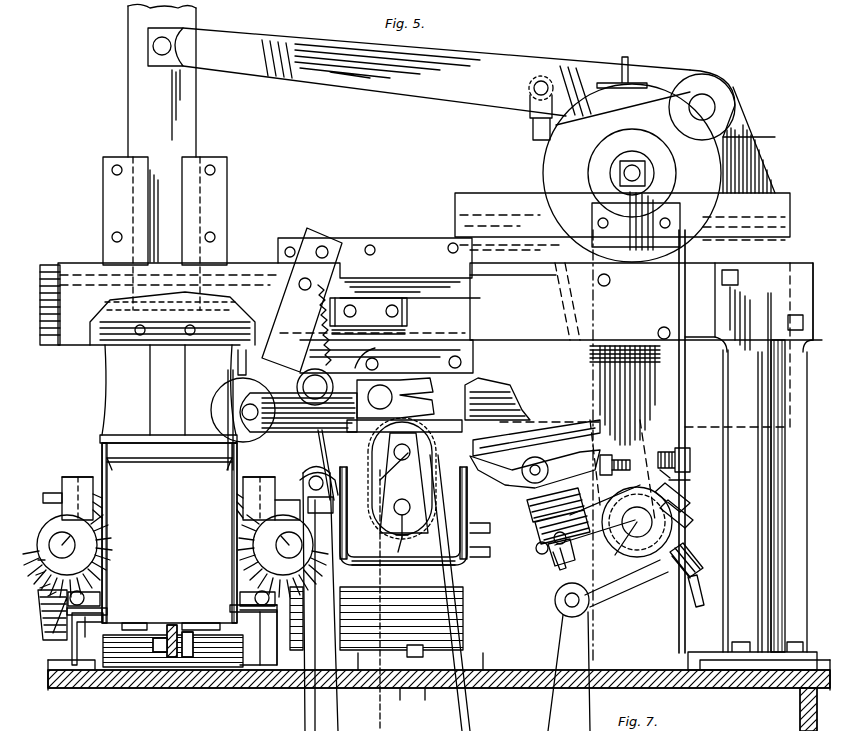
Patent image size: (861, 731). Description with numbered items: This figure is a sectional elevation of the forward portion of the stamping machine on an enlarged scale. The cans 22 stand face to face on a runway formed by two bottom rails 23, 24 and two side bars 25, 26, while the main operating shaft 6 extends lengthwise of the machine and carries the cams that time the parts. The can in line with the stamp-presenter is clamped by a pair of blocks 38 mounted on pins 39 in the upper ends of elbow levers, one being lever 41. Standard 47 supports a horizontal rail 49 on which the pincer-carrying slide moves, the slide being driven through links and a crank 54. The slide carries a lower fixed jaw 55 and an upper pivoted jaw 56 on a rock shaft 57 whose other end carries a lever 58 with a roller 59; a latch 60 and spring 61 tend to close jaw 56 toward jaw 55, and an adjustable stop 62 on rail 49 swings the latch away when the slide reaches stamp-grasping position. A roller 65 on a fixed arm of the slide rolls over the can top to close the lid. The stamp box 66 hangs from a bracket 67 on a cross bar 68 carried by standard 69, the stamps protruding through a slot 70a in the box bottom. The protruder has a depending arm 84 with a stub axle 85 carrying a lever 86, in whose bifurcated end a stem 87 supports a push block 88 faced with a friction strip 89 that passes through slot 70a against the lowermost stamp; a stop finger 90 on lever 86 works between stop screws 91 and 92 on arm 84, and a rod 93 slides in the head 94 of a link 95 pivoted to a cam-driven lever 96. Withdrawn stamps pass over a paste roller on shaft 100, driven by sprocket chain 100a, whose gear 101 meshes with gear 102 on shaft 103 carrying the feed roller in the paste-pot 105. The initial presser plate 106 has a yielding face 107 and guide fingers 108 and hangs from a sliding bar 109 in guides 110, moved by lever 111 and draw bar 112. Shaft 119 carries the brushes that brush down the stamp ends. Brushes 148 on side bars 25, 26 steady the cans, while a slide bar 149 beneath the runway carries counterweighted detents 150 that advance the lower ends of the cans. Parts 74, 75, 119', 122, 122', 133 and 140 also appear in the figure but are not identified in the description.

The main operating shaft 6 is at (368, 229).
The cans 22 is at (169, 533).
The bottom rail 23 is at (130, 638).
The bottom rail 24 is at (210, 636).
The side bar 25 is at (174, 635).
The side bar 26 is at (258, 612).
The blocks 38 is at (68, 477).
The pins 39 is at (285, 480).
The elbow lever 41 is at (320, 599).
The standard 47 is at (746, 502).
The rail 49 is at (641, 301).
The crank 54 is at (298, 412).
The lower fixed jaw 55 is at (420, 434).
The upper pivoted jaw 56 is at (470, 388).
The rock shaft 57 is at (386, 356).
The lever 58 is at (372, 352).
The roller 59 is at (325, 405).
The latch 60 is at (371, 300).
The spring 61 is at (368, 307).
The adjustable stop 62 is at (390, 299).
The roller 65 is at (265, 443).
The stamp box 66 is at (753, 466).
The bracket 67 is at (622, 221).
The cross bar 68 is at (58, 263).
The standard 69 is at (722, 143).
The slot 70a is at (510, 420).
The plate 74 is at (630, 445).
The disc 75 is at (632, 173).
The depending arm 84 is at (659, 437).
The stub axle 85 is at (631, 529).
The lever 86 is at (565, 540).
The stem 87 is at (556, 565).
The push block 88 is at (535, 469).
The strip 89 is at (530, 432).
The stop finger 90 is at (591, 493).
The stop screw 91 is at (610, 458).
The stop screw 92 is at (677, 452).
The rod 93 is at (706, 591).
The head 94 is at (705, 562).
The link 95 is at (628, 582).
The lever 96 is at (585, 629).
The shaft 100 is at (388, 470).
The sprocket chain 100a is at (450, 712).
The gear 101 is at (372, 452).
The gear 102 is at (380, 512).
The shaft 103 is at (397, 546).
The paste-pot 105 is at (425, 593).
The plate 106 is at (100, 345).
The yielding face 107 is at (165, 360).
The guide fingers 108 is at (256, 362).
The sliding bar 109 is at (162, 80).
The guides 110 is at (103, 192).
The lever 111 is at (436, 76).
The draw bar 112 is at (535, 135).
The shaft 119 is at (250, 511).
The brush block 119' is at (94, 511).
The brush 122 is at (264, 556).
The brush 122' is at (84, 556).
The wedge 133 is at (250, 622).
The guide 140 is at (140, 410).
The brushes 148 is at (260, 596).
The slide bar 149 is at (170, 640).
The detents 150 is at (155, 623).